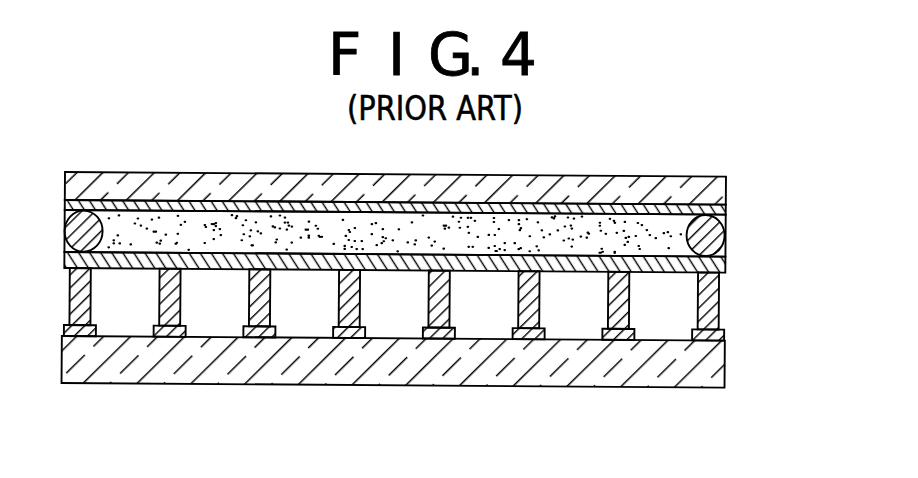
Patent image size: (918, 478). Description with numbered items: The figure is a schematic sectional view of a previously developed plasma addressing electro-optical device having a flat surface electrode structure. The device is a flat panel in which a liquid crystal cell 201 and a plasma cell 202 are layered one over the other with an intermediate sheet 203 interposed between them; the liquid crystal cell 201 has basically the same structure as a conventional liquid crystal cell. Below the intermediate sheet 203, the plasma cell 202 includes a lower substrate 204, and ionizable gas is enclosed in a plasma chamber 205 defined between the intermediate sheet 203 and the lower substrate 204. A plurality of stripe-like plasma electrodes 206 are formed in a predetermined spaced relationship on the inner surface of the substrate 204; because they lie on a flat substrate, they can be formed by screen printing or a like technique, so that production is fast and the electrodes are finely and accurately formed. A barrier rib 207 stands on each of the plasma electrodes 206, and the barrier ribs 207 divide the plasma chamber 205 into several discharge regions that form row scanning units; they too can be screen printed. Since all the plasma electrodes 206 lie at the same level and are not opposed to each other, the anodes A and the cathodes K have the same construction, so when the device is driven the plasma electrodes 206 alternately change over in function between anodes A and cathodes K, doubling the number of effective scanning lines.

The liquid crystal cell 201 is at (750, 172).
The plasma cell 202 is at (440, 361).
The intermediate sheet 203 is at (727, 265).
The lower substrate 204 is at (700, 385).
The plasma chamber 205 is at (657, 313).
The plasma electrode 206 is at (394, 381).
The barrier rib 207 is at (543, 300).
The anode A is at (172, 337).
The cathode K is at (258, 326).